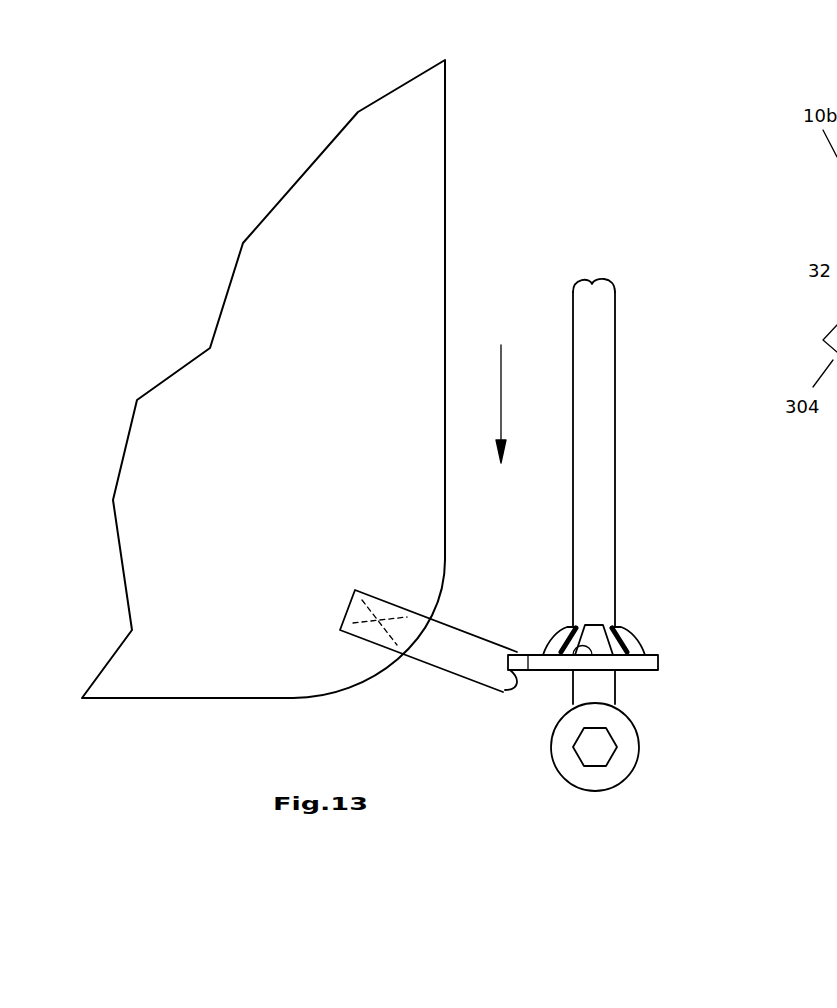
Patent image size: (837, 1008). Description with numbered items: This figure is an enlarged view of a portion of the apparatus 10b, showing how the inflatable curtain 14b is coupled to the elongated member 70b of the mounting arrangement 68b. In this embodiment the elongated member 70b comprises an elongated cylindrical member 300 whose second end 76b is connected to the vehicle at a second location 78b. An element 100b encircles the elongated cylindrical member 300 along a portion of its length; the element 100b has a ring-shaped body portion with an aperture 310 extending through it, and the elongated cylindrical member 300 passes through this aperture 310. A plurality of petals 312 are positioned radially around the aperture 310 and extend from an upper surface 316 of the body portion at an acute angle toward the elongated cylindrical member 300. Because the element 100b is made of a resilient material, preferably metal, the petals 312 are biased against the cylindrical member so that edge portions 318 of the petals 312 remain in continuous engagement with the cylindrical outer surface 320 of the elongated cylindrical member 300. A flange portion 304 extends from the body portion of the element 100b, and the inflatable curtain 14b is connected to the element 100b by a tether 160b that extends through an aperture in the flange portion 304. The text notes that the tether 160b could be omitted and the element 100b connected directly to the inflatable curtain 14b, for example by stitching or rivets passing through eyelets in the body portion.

The seat assembly 10b is at (247, 158).
The inflatable curtain 14b is at (188, 662).
The tether 160b is at (435, 648).
The elongated cylindrical member 300 is at (642, 453).
The cylindrical outer surface 320 is at (598, 317).
The elongated member 70b is at (598, 450).
The element 100b is at (658, 658).
The flange portion 304 is at (512, 683).
The upper surface 316 is at (573, 657).
The edge portions 318 is at (593, 625).
The aperture 310 is at (608, 625).
The petals 312 is at (625, 645).
The second end 76b is at (607, 687).
The second location 78b is at (595, 748).
The mounting assembly 68b is at (748, 698).